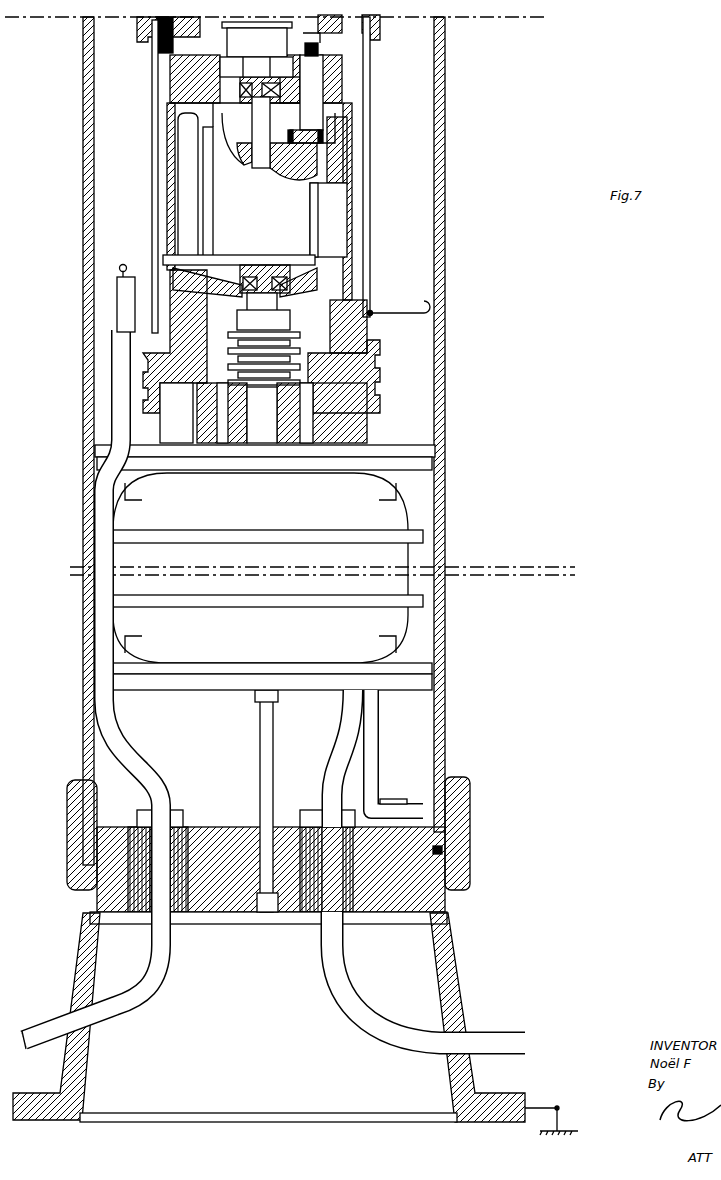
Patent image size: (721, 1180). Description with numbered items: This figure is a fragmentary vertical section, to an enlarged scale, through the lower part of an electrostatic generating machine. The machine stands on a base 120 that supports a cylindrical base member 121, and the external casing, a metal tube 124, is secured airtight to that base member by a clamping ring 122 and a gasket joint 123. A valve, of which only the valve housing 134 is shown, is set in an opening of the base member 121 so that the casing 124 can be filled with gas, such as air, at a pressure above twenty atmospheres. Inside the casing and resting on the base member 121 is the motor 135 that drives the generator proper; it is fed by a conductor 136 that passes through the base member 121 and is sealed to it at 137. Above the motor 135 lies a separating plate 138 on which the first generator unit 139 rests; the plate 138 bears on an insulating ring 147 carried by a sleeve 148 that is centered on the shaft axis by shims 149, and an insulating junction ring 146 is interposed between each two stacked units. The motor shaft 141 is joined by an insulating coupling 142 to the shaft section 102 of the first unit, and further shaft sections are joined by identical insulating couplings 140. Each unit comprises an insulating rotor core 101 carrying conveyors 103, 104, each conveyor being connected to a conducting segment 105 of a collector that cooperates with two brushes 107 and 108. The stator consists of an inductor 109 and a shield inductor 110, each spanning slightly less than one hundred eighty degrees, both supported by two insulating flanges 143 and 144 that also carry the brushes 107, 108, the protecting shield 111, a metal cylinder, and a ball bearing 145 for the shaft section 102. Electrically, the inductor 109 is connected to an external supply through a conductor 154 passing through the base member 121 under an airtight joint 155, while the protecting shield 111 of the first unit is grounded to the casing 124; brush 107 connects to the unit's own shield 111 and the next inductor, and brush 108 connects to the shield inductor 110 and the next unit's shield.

The insulating rotor core 101 is at (320, 167).
The shaft section 102 is at (223, 122).
The conveyor 103 is at (328, 217).
The conveyor 104 is at (250, 237).
The conducting segment 105 is at (338, 150).
The brush 107 is at (203, 117).
The brush 108 is at (313, 108).
The inductor 109 is at (172, 167).
The shield inductor 110 is at (347, 253).
The protecting shield 111 is at (225, 228).
The base 120 is at (453, 997).
The cylindrical base member 121 is at (410, 892).
The clamping ring 122 is at (468, 883).
The gasket joint 123 is at (445, 850).
The metal tube 124 is at (88, 170).
The valve housing 134 is at (262, 913).
The motor 135 is at (400, 578).
The conductor 136 is at (357, 998).
The seal 137 is at (438, 852).
The separating plate 138 is at (413, 448).
The generator unit 139 is at (384, 240).
The insulating coupling 140 is at (248, 22).
The motor shaft 141 is at (257, 413).
The insulating coupling 142 is at (300, 365).
The insulating flange 143 is at (372, 322).
The insulating flange 144 is at (330, 77).
The ball bearing 145 is at (233, 90).
The insulating junction ring 146 is at (427, 24).
The insulating ring 147 is at (357, 407).
The sleeve 148 is at (390, 463).
The shims 149 is at (175, 420).
The conductor 154 is at (112, 387).
The airtight joint 155 is at (138, 873).